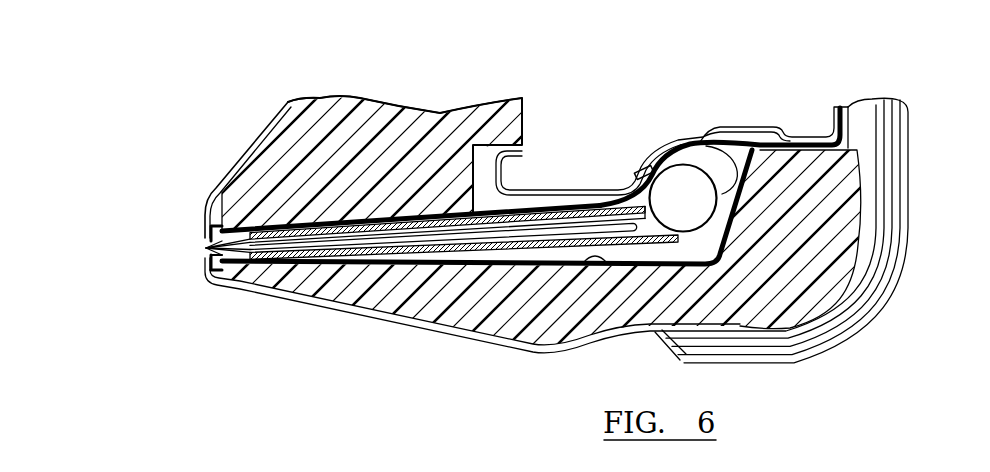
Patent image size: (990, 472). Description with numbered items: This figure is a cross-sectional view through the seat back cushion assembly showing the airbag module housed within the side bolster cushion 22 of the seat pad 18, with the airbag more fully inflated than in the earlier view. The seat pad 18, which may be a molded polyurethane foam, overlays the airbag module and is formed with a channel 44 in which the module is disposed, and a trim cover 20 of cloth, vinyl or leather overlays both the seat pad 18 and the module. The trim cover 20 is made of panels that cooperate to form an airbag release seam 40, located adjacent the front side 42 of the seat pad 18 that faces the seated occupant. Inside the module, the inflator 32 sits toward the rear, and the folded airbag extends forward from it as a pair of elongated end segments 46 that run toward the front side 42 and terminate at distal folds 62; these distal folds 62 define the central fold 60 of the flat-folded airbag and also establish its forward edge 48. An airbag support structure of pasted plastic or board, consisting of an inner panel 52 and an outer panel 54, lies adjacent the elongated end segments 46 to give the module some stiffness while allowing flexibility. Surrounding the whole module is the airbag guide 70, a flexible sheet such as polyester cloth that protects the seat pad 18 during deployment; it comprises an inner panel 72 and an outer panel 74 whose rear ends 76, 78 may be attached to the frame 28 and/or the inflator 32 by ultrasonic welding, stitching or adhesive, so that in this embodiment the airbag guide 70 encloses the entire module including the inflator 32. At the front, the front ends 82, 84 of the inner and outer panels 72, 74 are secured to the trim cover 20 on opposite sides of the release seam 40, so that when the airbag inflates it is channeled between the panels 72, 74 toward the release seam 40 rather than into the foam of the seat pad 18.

The seat pad 18 is at (822, 232).
The trim cover 20 is at (266, 128).
The side bolster cushion 22 is at (375, 150).
The frame 28 is at (652, 167).
The inflator 32 is at (677, 190).
The airbag release seam 40 is at (206, 248).
The front side 42 is at (203, 210).
The channel 44 is at (596, 236).
The elongated end segments 46 is at (587, 216).
The forward edge 48 is at (222, 270).
The inner panel 52 is at (417, 221).
The outer panel 54 is at (382, 258).
The central fold 60 is at (653, 240).
The distal folds 62 is at (207, 242).
The airbag guide 70 is at (739, 152).
The inner panel 72 is at (443, 282).
The outer panel 74 is at (350, 222).
The rear end 76 is at (727, 148).
The rear end 78 is at (713, 186).
The front end 82 is at (218, 226).
The front end 84 is at (230, 273).